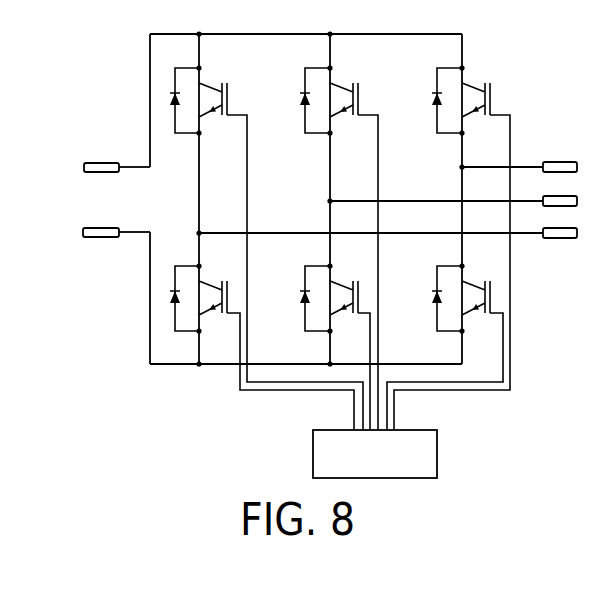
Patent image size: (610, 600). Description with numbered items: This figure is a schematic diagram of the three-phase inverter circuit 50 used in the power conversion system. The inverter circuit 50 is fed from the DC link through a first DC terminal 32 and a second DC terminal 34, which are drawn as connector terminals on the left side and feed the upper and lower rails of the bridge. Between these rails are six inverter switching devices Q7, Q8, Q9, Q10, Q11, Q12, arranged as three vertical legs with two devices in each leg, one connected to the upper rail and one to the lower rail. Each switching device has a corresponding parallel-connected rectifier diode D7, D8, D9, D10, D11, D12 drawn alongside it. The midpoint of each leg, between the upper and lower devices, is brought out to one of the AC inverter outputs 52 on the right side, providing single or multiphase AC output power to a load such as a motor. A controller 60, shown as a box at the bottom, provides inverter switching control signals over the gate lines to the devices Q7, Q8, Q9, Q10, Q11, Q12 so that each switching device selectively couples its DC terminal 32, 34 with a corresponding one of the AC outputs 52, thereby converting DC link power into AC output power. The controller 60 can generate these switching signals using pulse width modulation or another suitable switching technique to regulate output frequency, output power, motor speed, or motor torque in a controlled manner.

The inverter circuit 50 is at (118, 55).
The AC inverter output 52 is at (545, 268).
The DC terminal 32 is at (142, 166).
The DC terminal 34 is at (142, 231).
The controller 60 is at (313, 456).
The inverter switching device Q7 is at (281, 243).
The inverter switching device Q8 is at (276, 343).
The inverter switching device Q9 is at (354, 243).
The inverter switching device Q10 is at (350, 343).
The inverter switching device Q11 is at (452, 243).
The inverter switching device Q12 is at (445, 343).
The rectifier diode D7 is at (177, 100).
The rectifier diode D8 is at (177, 298).
The rectifier diode D9 is at (307, 100).
The rectifier diode D10 is at (305, 298).
The rectifier diode D11 is at (437, 100).
The rectifier diode D12 is at (436, 298).